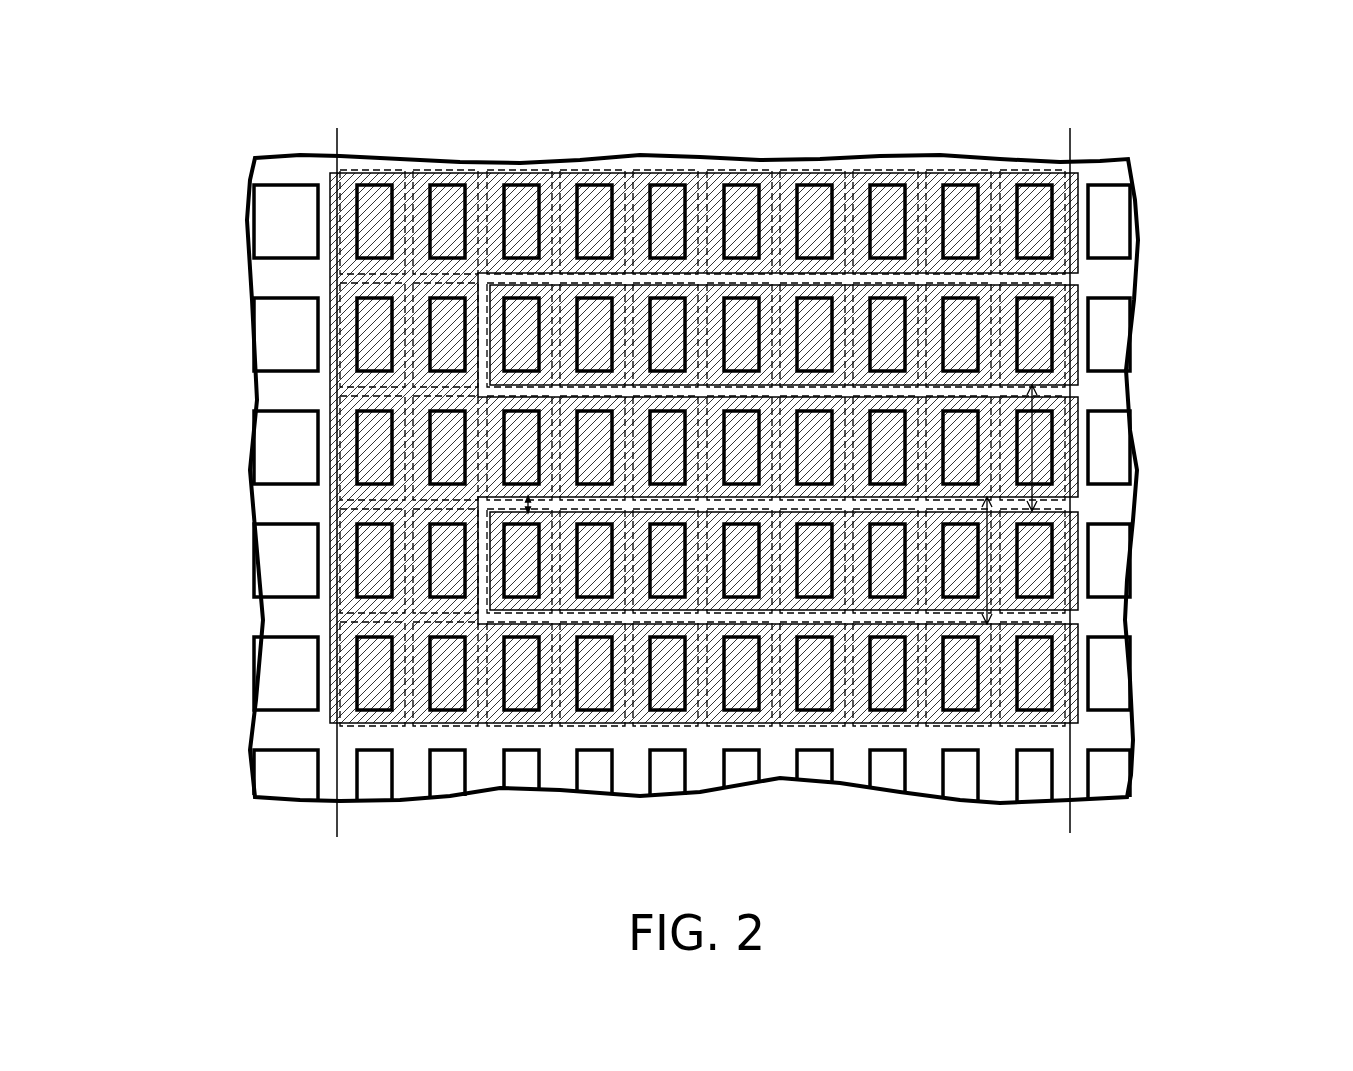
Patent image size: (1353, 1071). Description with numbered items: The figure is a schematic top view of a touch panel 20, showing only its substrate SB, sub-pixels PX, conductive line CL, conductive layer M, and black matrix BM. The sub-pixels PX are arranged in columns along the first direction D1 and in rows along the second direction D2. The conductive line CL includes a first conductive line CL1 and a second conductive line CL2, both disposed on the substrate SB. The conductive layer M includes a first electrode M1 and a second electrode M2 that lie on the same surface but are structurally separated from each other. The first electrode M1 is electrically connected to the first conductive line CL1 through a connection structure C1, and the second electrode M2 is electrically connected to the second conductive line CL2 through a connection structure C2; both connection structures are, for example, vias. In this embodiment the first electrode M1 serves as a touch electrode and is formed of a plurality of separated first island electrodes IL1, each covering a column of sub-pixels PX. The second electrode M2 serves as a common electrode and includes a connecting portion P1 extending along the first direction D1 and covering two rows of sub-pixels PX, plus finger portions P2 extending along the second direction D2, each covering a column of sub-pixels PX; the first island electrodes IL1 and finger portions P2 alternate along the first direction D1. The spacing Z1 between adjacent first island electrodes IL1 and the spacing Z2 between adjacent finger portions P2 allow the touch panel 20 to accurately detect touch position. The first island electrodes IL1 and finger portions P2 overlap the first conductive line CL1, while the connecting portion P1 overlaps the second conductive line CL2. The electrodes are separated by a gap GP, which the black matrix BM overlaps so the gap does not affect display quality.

The substrate SB is at (1138, 198).
The connecting portion P1 is at (380, 171).
The finger portion P2 is at (1078, 211).
The conductive layer M is at (77, 118).
The first electrode M1 is at (93, 133).
The second electrode M2 is at (127, 153).
The conductive line CL is at (127, 245).
The first conductive line CL1 is at (1070, 833).
The second conductive line CL2 is at (337, 836).
The first island electrode IL1 is at (889, 483).
The connection structure C1 is at (1070, 335).
The connection structure C2 is at (327, 510).
The spacing Z1 is at (1032, 438).
The spacing Z2 is at (987, 583).
The gap GP is at (528, 503).
The sub-pixel PX is at (352, 726).
The black matrix BM is at (1090, 693).
The first direction D1 is at (1172, 858).
The second direction D2 is at (1278, 839).
The touch panel 20 is at (1352, 922).